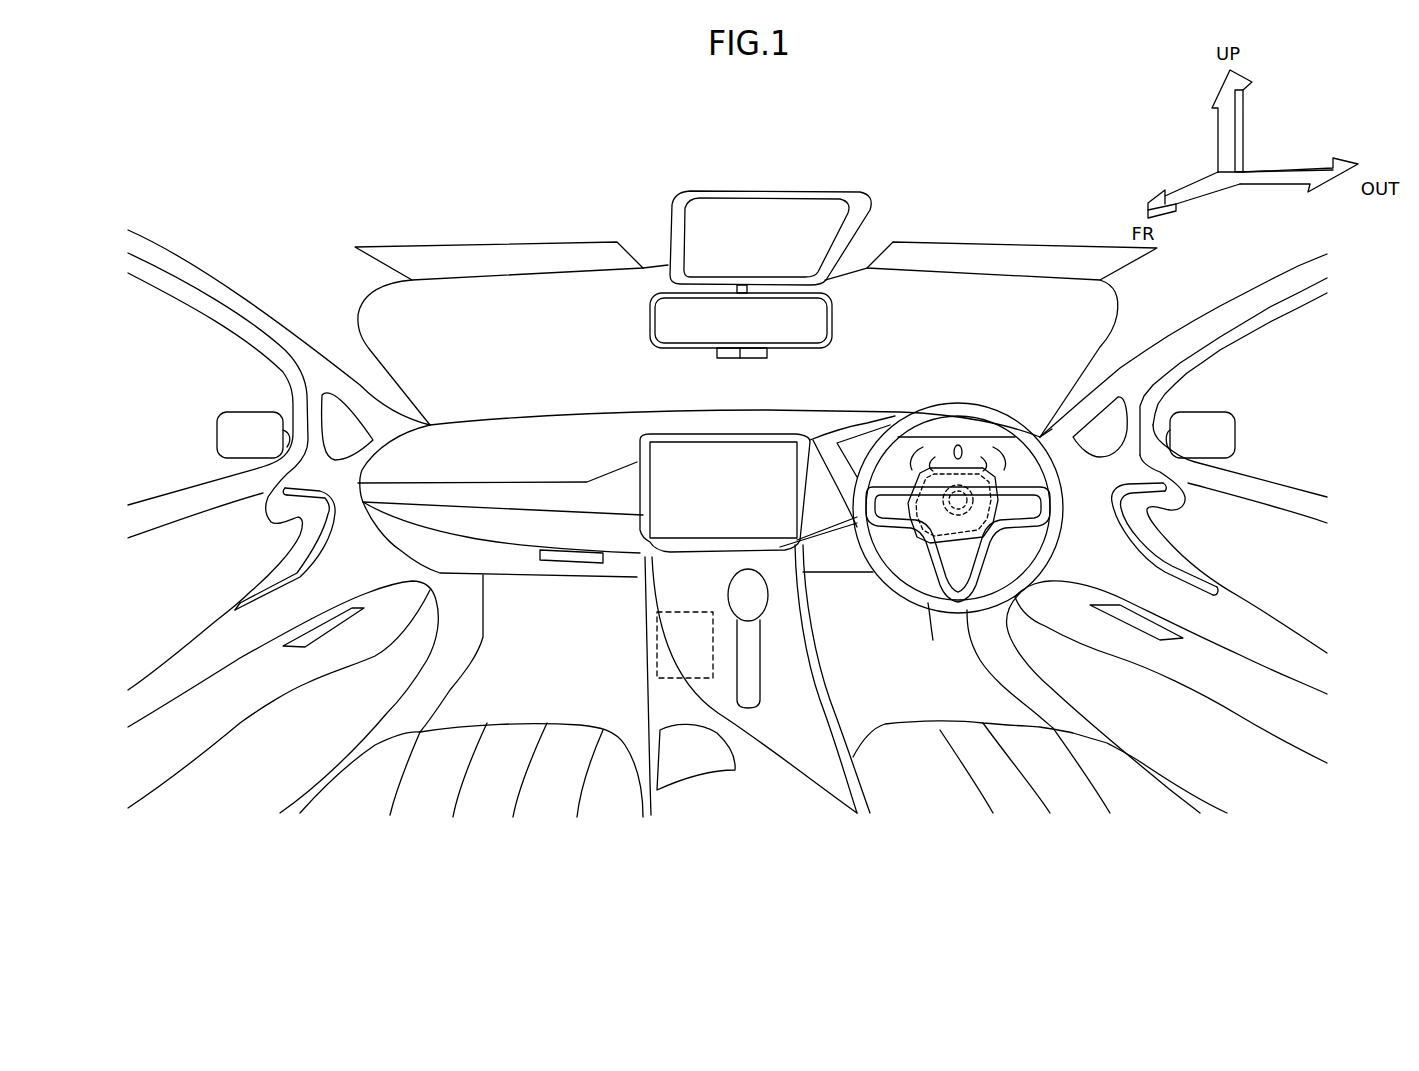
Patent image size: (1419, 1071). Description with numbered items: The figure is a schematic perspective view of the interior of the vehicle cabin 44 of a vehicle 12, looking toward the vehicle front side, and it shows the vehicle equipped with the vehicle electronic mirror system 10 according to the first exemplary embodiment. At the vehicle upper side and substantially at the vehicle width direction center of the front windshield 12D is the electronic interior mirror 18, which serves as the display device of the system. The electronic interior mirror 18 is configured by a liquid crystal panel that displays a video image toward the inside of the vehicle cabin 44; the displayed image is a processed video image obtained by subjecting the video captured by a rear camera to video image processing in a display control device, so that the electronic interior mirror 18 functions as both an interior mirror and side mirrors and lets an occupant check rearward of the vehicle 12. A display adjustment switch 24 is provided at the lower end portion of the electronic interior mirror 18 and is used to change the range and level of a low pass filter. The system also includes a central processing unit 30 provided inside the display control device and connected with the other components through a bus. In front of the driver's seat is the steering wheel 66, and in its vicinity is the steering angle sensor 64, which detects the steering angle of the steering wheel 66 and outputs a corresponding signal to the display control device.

The vehicle electronic mirror system 10 is at (944, 339).
The vehicle 12 is at (1283, 383).
The front windshield 12D is at (1057, 418).
The electronic interior mirror 18 is at (832, 323).
The display adjustment switch 24 is at (730, 358).
The central processing unit (CPU) 30 is at (667, 682).
The vehicle cabin 44 is at (556, 656).
The steering angle sensor 64 is at (975, 503).
The steering wheel 66 is at (934, 612).